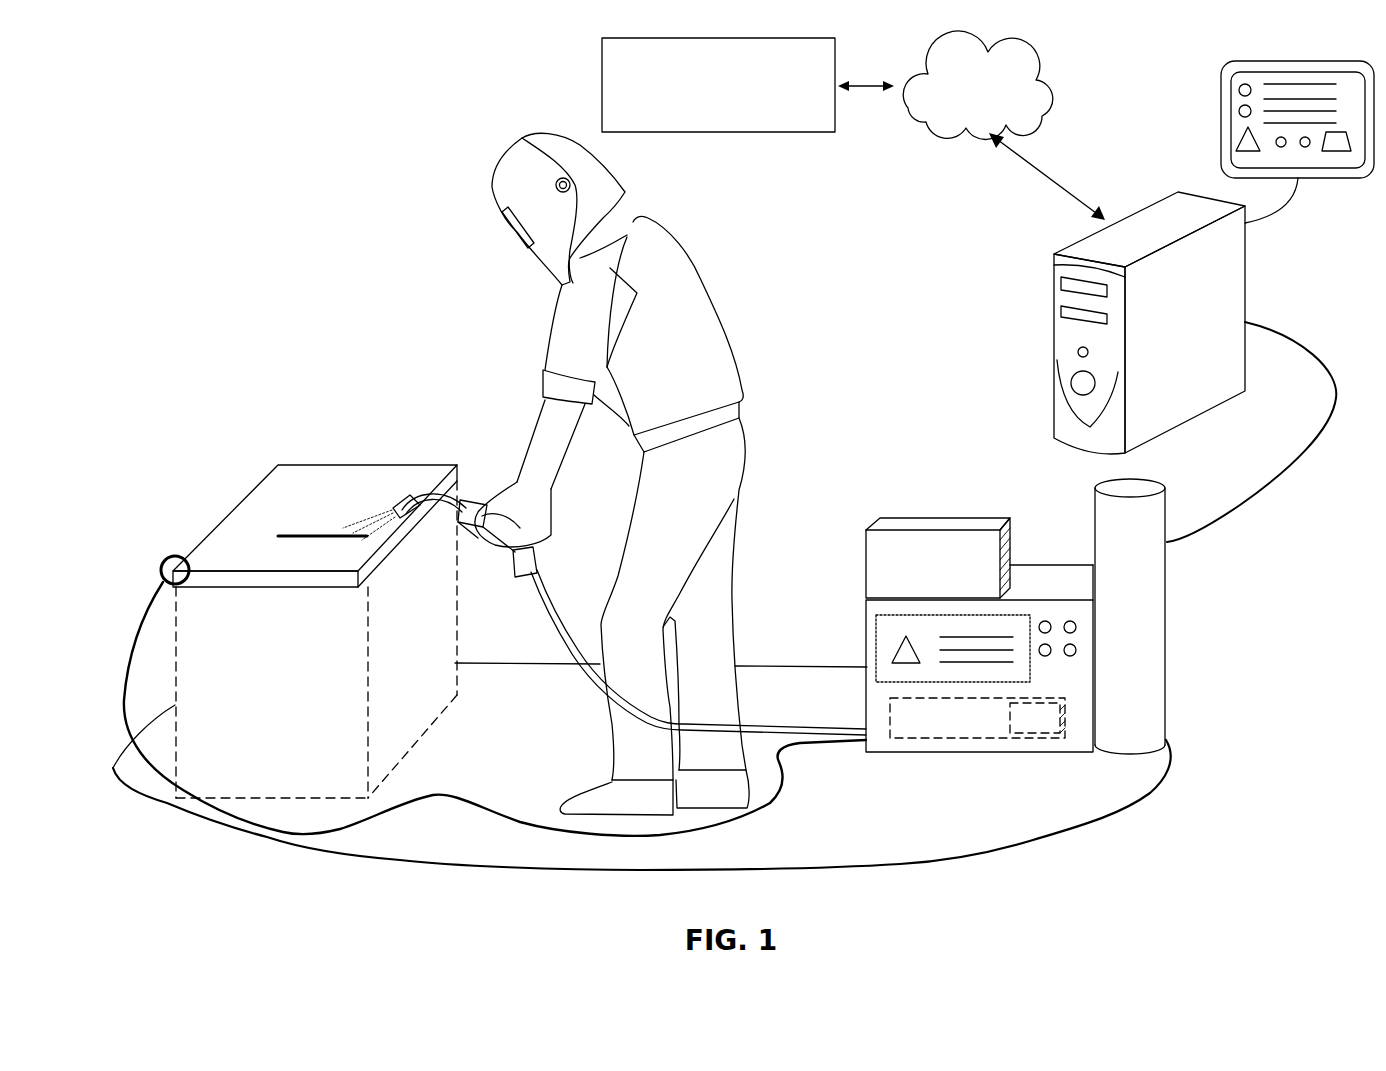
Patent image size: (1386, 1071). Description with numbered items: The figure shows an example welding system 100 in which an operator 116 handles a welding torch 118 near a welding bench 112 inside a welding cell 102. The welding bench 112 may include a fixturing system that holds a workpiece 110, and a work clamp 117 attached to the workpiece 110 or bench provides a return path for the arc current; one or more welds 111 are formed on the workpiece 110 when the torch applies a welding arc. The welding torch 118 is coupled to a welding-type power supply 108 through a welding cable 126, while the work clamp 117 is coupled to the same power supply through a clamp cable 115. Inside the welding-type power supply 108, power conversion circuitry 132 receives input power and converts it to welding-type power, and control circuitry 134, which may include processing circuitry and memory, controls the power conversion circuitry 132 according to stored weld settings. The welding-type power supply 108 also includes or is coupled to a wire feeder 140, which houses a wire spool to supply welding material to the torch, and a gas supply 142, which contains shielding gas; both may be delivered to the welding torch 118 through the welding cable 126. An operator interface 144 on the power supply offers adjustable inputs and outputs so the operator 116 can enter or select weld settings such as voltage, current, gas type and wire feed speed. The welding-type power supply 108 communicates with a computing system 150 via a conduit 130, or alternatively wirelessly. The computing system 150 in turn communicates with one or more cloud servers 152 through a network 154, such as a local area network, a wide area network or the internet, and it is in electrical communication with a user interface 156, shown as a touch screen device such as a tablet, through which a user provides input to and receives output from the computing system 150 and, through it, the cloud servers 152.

The welding system 100 is at (158, 112).
The welding cell 102 is at (1000, 835).
The welding-type power supply 108 is at (879, 495).
The workpiece 110 is at (230, 515).
The weld 111 is at (343, 530).
The welding bench 112 is at (316, 639).
The clamp cable 115 is at (467, 793).
The operator 116 is at (663, 223).
The work clamp 117 is at (160, 557).
The welding torch 118 is at (493, 500).
The welding cable 126 is at (787, 715).
The conduit 130 is at (1222, 518).
The power conversion circuitry 132 is at (950, 740).
The control circuitry 134 is at (1032, 740).
The wire feeder 140 is at (938, 558).
The gas supply 142 is at (1130, 616).
The operator interface 144 is at (1030, 602).
The computing system 150 is at (1051, 340).
The cloud server 152 is at (748, 85).
The network 154 is at (1057, 84).
The user interface 156 is at (1219, 120).